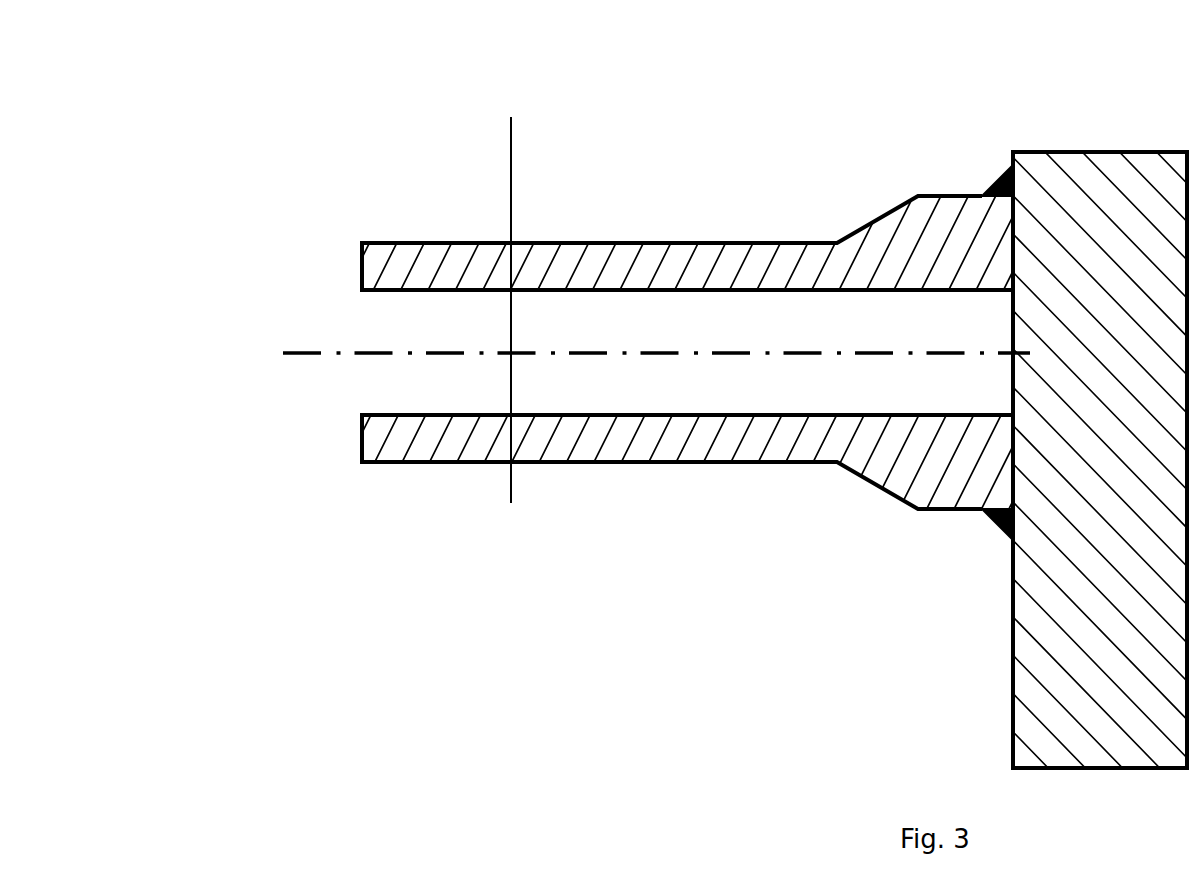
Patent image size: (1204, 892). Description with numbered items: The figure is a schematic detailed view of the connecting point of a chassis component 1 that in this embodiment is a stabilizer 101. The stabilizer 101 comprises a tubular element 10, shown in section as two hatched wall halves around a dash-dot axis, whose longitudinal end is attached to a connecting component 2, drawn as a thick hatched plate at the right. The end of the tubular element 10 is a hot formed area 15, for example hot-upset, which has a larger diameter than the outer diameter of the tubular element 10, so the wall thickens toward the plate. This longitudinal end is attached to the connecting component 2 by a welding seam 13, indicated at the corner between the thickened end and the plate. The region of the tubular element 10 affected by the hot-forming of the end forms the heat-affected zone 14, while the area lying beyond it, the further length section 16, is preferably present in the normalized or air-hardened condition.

The chassis component 1 is at (659, 324).
The stabilizer 101 is at (400, 222).
The connecting component 2 is at (1012, 645).
The tubular element 10 is at (388, 462).
The welding seam 13 is at (995, 527).
The heat-affected zone 14 is at (588, 153).
The hot formed area 15 is at (933, 192).
The further length section 16 is at (511, 153).